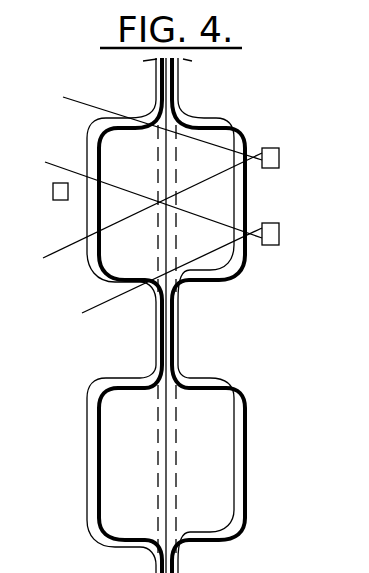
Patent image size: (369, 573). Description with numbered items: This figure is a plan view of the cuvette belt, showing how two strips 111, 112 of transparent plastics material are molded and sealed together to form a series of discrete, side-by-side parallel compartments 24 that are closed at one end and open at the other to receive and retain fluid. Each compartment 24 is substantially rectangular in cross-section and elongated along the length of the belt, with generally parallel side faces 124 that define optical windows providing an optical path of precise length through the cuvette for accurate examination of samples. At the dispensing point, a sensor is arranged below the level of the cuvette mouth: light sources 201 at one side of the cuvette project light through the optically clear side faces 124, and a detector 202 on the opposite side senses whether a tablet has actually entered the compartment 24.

The compartment 24 is at (207, 372).
The strip 111 is at (177, 334).
The strip 112 is at (160, 333).
The side face 124 is at (87, 255).
The light source 201 is at (279, 157).
The detector 202 is at (60, 192).